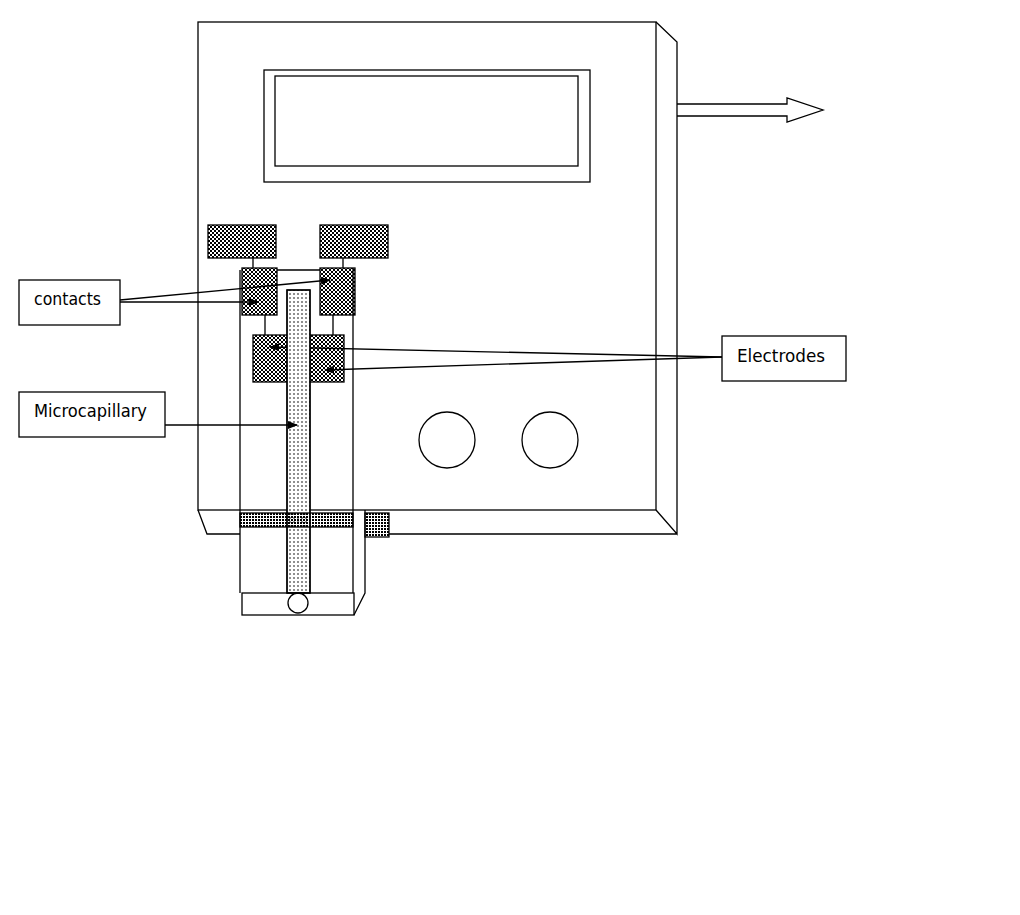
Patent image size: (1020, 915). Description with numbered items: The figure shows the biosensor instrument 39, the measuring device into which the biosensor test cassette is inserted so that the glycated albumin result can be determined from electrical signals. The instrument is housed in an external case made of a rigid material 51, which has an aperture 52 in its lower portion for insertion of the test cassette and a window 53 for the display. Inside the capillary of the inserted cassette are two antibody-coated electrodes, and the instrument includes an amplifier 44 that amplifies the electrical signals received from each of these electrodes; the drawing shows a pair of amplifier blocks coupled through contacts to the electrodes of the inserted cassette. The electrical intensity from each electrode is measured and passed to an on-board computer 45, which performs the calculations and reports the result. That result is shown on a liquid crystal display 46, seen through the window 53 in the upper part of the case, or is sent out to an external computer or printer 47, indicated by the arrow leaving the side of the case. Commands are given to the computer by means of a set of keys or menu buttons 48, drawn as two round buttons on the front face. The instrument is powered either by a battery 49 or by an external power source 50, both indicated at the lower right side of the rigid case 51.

The biosensor instrument 39 is at (367, 409).
The amplifier 44 is at (255, 247).
The on-board computer 45 is at (317, 211).
The liquid crystal display 46 is at (426, 121).
The external computer or printer 47 is at (767, 154).
The menu buttons 48 is at (455, 447).
The battery 49 is at (665, 455).
The external power source 50 is at (665, 499).
The rigid case 51 is at (217, 66).
The aperture 52 is at (240, 525).
The window 53 is at (264, 130).